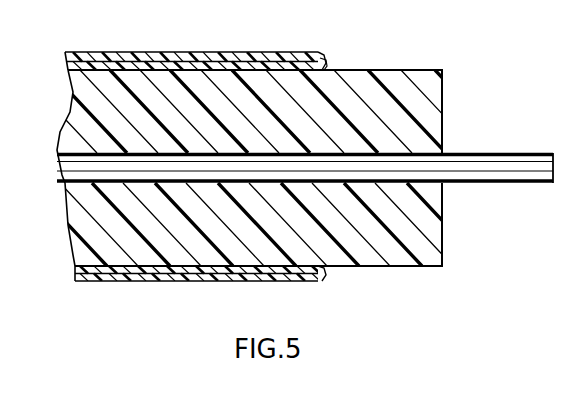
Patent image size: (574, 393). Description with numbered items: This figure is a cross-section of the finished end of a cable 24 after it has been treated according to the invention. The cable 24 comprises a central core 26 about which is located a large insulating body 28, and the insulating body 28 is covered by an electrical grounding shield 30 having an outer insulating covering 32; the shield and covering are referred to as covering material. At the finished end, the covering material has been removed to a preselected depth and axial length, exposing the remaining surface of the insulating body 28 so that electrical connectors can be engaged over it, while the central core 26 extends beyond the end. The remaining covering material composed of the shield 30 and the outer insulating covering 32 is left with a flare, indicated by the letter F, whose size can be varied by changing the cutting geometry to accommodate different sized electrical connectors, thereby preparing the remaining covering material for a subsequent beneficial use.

The cable 24 is at (460, 128).
The central core 26 is at (483, 174).
The insulating body 28 is at (429, 69).
The electrical grounding shield 30 is at (329, 65).
The outer insulating covering 32 is at (318, 51).
The flare F is at (326, 59).